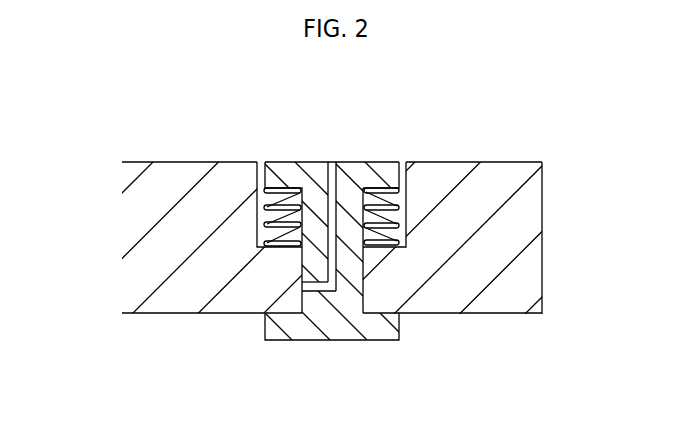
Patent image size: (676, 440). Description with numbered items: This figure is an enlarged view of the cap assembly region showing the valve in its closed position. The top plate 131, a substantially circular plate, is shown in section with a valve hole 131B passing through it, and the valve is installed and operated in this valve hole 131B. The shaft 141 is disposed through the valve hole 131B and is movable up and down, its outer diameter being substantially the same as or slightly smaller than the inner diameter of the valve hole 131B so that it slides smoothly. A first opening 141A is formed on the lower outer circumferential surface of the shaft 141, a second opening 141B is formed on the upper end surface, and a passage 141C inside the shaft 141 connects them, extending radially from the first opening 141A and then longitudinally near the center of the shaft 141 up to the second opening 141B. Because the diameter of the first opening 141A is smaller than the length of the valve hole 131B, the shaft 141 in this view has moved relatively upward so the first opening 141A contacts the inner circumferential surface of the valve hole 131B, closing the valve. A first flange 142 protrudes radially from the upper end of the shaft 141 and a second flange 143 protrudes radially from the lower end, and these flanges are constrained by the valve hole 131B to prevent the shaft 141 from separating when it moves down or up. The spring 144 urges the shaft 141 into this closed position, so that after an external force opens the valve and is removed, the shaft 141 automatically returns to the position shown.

The top plate 131 is at (498, 170).
The valve hole 131B is at (363, 298).
The shaft 141 is at (353, 270).
The first opening 141A is at (300, 283).
The second opening 141B is at (335, 162).
The passage 141C is at (331, 265).
The first flange 142 is at (384, 170).
The second flange 143 is at (337, 328).
The spring 144 is at (267, 208).